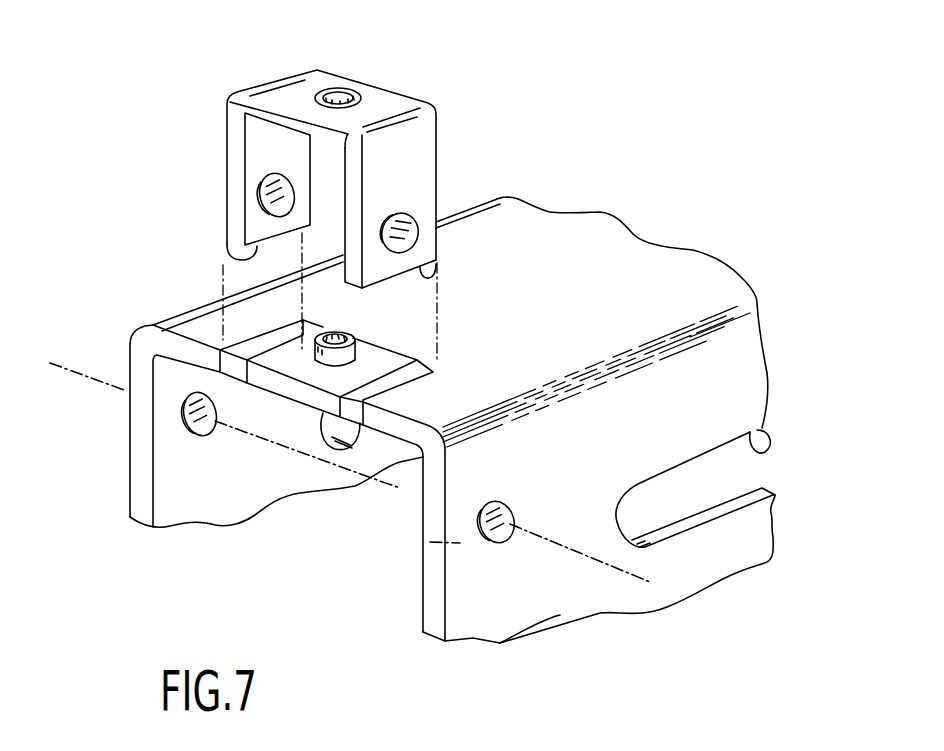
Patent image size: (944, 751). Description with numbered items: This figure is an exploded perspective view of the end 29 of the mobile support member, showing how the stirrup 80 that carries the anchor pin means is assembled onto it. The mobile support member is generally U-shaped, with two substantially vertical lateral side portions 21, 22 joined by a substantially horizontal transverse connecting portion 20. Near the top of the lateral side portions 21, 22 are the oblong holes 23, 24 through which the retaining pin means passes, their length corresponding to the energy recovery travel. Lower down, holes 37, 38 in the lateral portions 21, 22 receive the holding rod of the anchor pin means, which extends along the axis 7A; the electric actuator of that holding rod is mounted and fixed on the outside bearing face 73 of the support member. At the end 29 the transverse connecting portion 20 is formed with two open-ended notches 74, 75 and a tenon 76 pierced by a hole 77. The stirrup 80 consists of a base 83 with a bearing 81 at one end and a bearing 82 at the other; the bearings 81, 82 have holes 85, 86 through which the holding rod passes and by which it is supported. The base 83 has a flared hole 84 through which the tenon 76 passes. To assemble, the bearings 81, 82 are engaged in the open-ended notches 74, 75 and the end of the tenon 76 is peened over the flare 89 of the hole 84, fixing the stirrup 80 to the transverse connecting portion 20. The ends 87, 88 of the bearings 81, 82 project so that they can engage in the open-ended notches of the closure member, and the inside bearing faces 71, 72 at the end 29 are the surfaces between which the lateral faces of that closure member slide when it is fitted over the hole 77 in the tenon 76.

The transverse connecting portion 20 is at (634, 439).
The lateral side portion 21 is at (132, 492).
The lateral side portion 22 is at (430, 597).
The oblong hole 23 is at (372, 470).
The oblong hole 24 is at (772, 438).
The end of the mobile support member 29 is at (288, 420).
The hole 37 is at (183, 420).
The hole 38 is at (502, 542).
The axis of the anchor pin means 7A is at (60, 363).
The inside bearing face 71 is at (180, 500).
The inside bearing face 72 is at (423, 548).
The outside bearing face 73 is at (567, 593).
The open-ended notch 74 is at (403, 380).
The open-ended notch 75 is at (260, 343).
The tenon 76 is at (318, 362).
The hole 77 is at (334, 337).
The stirrup 80 is at (337, 153).
The bearing 81 is at (237, 131).
The bearing 82 is at (420, 158).
The base 83 is at (278, 90).
The flared hole 84 is at (336, 90).
The hole 85 is at (262, 194).
The hole 86 is at (417, 231).
The end of the bearing 87 is at (240, 252).
The end of the bearing 88 is at (421, 275).
The flare 89 is at (349, 91).